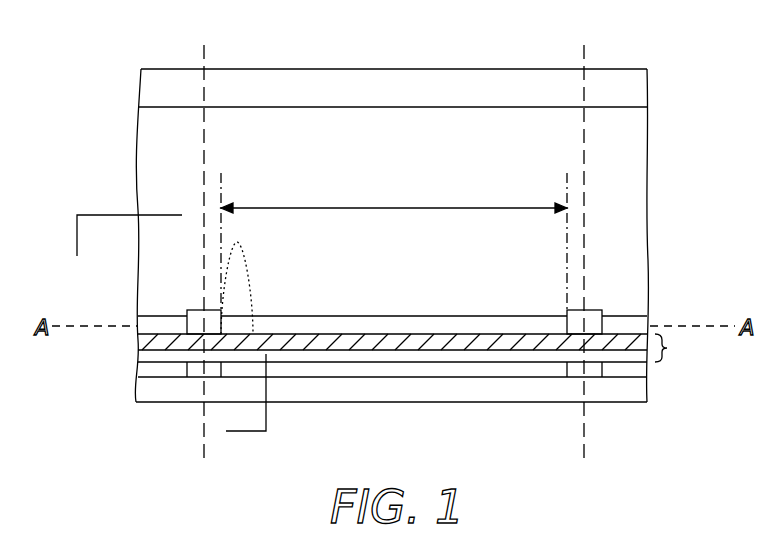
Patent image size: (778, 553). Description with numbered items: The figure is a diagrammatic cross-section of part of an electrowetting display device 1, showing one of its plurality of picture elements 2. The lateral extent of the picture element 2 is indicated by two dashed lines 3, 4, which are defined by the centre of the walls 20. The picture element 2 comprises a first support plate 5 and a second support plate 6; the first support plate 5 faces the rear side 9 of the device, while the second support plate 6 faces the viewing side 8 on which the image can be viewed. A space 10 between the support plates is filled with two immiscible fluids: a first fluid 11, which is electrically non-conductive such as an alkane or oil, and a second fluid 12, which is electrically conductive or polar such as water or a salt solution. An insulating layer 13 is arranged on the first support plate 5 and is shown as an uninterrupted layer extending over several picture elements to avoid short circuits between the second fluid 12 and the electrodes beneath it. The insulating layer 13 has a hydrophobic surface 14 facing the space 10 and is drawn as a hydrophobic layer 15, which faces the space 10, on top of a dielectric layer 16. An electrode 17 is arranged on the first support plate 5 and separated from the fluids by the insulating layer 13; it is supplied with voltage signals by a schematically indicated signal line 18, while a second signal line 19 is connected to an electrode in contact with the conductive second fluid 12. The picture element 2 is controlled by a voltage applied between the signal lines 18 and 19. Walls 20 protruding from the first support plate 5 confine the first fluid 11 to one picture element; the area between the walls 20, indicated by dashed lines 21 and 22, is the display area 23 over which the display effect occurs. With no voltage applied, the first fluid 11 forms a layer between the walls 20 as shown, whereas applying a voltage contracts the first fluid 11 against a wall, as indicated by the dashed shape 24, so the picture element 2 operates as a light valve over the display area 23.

The electrowetting display device 1 is at (730, 34).
The picture element 2 is at (419, 33).
The dashed line 3 is at (204, 52).
The dashed line 4 is at (584, 52).
The first support plate 5 is at (635, 389).
The second support plate 6 is at (632, 88).
The viewing side 8 is at (297, 69).
The rear side 9 is at (397, 402).
The space 10 is at (468, 123).
The first fluid 11 is at (547, 329).
The second fluid 12 is at (628, 211).
The insulating layer 13 is at (677, 348).
The hydrophobic surface 14 is at (473, 336).
The hydrophobic layer 15 is at (398, 341).
The dielectric layer 16 is at (333, 356).
The electrode 17 is at (494, 368).
The signal line 18 is at (246, 431).
The second signal line 19 is at (77, 230).
The walls 20 is at (205, 313).
The dashed line 21 is at (221, 180).
The dashed line 22 is at (567, 185).
The display area 23 is at (394, 197).
The dashed shape 24 is at (227, 257).